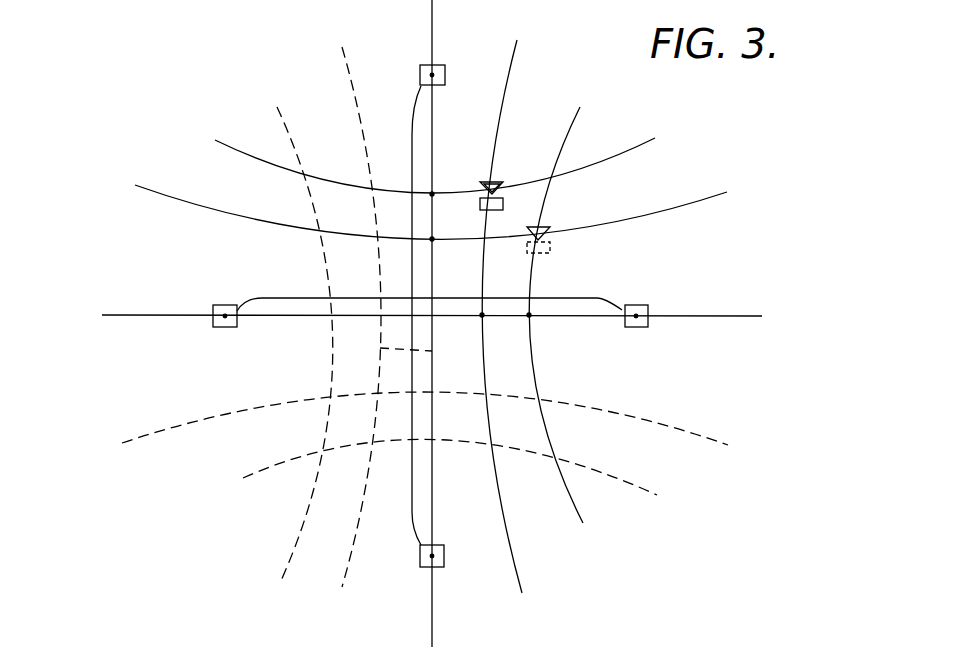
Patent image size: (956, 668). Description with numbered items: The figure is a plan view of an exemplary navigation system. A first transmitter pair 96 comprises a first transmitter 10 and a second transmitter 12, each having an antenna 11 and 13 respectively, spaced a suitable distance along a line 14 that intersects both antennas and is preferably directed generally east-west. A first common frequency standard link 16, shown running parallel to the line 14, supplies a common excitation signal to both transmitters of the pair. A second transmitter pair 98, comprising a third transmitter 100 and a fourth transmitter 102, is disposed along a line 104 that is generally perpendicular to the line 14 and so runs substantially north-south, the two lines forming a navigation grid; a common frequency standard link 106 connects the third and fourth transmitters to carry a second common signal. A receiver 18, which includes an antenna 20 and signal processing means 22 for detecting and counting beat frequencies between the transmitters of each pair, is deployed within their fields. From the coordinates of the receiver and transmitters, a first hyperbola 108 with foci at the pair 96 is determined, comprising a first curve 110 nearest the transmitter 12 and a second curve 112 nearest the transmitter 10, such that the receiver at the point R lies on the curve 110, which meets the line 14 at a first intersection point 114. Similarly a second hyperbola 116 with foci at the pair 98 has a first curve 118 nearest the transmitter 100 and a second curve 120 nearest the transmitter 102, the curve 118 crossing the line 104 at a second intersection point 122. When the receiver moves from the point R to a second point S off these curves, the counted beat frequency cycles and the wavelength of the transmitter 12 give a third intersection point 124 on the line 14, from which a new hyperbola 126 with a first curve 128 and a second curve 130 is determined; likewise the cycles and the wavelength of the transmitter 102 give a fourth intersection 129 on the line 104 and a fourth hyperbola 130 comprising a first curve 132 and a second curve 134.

The first transmitter 10 is at (222, 328).
The antenna 11 is at (215, 305).
The second transmitter 12 is at (642, 328).
The antenna 13 is at (648, 310).
The line 14 is at (742, 313).
The first common frequency standard link 16 is at (298, 297).
The receiver 18 is at (513, 177).
The antenna 20 is at (488, 182).
The signal processing means 22 is at (503, 205).
The first point R is at (496, 186).
The second point S is at (540, 232).
The first transmitter pair 96 is at (236, 293).
The second transmitter pair 98 is at (447, 91).
The third transmitter 100 is at (445, 70).
The fourth transmitter 102 is at (445, 553).
The line 104 is at (432, 627).
The common frequency standard link 106 is at (411, 128).
The first hyperbola 108 is at (486, 362).
The first curve 110 is at (487, 412).
The second curve 112 is at (377, 400).
The first intersection point 114 is at (484, 317).
The second hyperbola 116 is at (441, 206).
The first curve 118 is at (448, 193).
The second curve 120 is at (654, 495).
The second intersection point 122 is at (430, 193).
The third intersection point 124 is at (531, 317).
The new hyperbola 126 is at (323, 363).
The first curve 128 is at (546, 428).
The fourth intersection 129 is at (433, 241).
The fourth hyperbola 130 is at (253, 207).
The first curve 132 is at (282, 218).
The second curve 134 is at (243, 478).